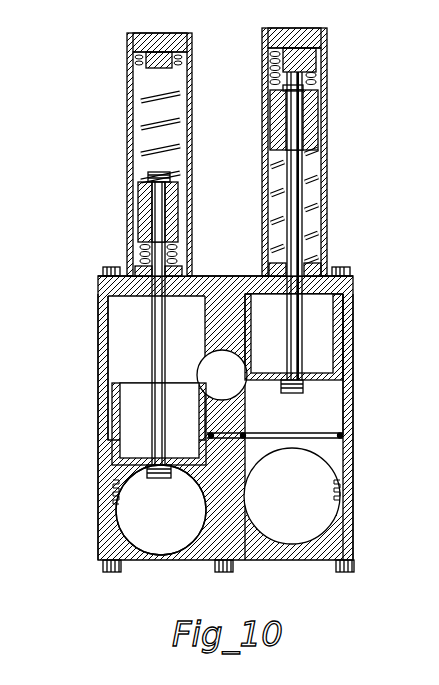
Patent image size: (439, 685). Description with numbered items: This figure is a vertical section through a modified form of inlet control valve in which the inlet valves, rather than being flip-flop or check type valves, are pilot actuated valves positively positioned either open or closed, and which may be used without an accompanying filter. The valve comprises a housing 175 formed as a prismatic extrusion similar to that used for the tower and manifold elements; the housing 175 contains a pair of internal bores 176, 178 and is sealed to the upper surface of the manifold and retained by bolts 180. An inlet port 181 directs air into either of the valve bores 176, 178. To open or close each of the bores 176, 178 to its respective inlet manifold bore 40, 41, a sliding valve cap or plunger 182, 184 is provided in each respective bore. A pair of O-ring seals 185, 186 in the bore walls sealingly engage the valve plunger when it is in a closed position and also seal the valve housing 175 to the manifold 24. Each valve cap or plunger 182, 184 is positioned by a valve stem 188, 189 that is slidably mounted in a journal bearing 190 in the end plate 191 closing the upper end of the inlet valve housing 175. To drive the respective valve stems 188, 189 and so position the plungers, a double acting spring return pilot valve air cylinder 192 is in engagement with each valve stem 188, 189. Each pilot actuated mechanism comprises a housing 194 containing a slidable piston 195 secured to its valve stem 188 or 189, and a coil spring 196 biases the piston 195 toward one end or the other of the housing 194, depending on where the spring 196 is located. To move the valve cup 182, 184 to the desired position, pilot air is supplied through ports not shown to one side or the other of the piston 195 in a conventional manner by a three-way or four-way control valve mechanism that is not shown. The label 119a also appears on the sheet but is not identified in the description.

The outlet manifold 24 is at (355, 536).
The inlet manifold bore 40 is at (280, 548).
The inlet manifold bore 41 is at (143, 547).
The valve assembly 119a is at (417, 184).
The housing 175 is at (346, 370).
The valve bore 176 is at (346, 410).
The valve bore 178 is at (114, 338).
The bolts 180 is at (108, 572).
The inlet port 181 is at (234, 385).
The sliding valve cap or plunger 182 is at (353, 328).
The sliding valve cap or plunger 184 is at (119, 396).
The O-ring seal 185 is at (349, 437).
The O-ring seal 186 is at (107, 440).
The valve stem 188 is at (293, 172).
The valve stem 189 is at (157, 197).
The journal bearing 190 is at (268, 272).
The end plate 191 is at (203, 290).
The double acting spring return pilot valve air cylinder 192 is at (125, 61).
The housing 194 is at (127, 97).
The piston 195 is at (139, 219).
The coil spring 196 is at (181, 105).